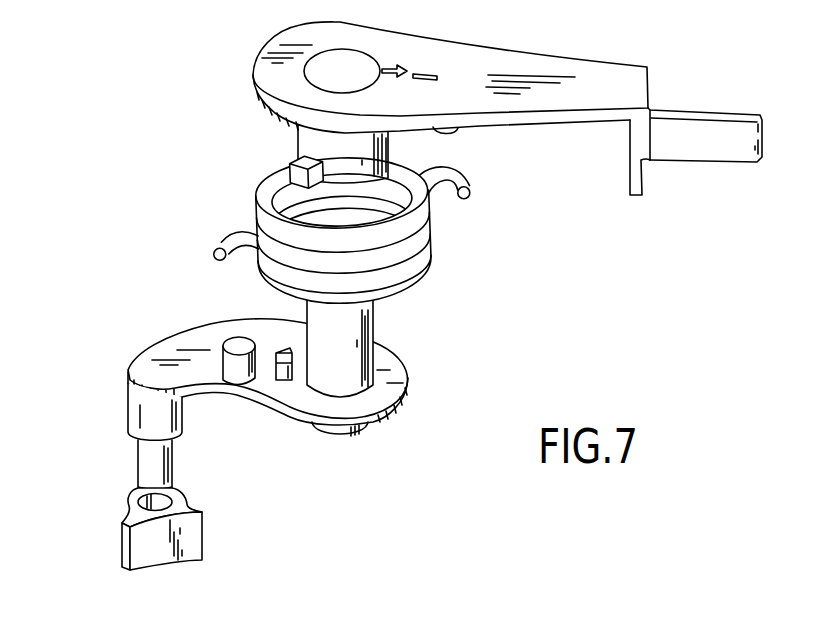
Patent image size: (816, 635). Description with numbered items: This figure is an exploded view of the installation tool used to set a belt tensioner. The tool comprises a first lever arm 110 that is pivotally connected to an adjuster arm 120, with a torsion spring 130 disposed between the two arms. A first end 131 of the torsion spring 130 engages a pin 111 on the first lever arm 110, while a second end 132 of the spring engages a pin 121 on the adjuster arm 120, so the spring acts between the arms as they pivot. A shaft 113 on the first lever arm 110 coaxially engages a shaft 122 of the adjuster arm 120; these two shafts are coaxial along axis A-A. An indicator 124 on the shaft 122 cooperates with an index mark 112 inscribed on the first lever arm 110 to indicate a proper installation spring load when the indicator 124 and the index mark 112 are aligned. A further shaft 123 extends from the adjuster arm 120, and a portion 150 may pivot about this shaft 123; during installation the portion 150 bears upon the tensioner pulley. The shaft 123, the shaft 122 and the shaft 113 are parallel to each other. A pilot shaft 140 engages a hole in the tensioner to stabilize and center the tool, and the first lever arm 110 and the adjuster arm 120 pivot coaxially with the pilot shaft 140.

The first lever arm 110 is at (558, 54).
The pin 111 is at (438, 130).
The index mark 112 is at (432, 72).
The shaft 113 is at (297, 135).
The adjuster arm 120 is at (154, 346).
The pin 121 is at (240, 372).
The shaft 122 is at (375, 323).
The shaft 123 is at (137, 423).
The indicator 124 is at (253, 90).
The torsion spring 130 is at (427, 256).
The first end 131 is at (472, 198).
The second end 132 is at (222, 237).
The pilot shaft 140 is at (344, 440).
The portion 150 is at (122, 567).